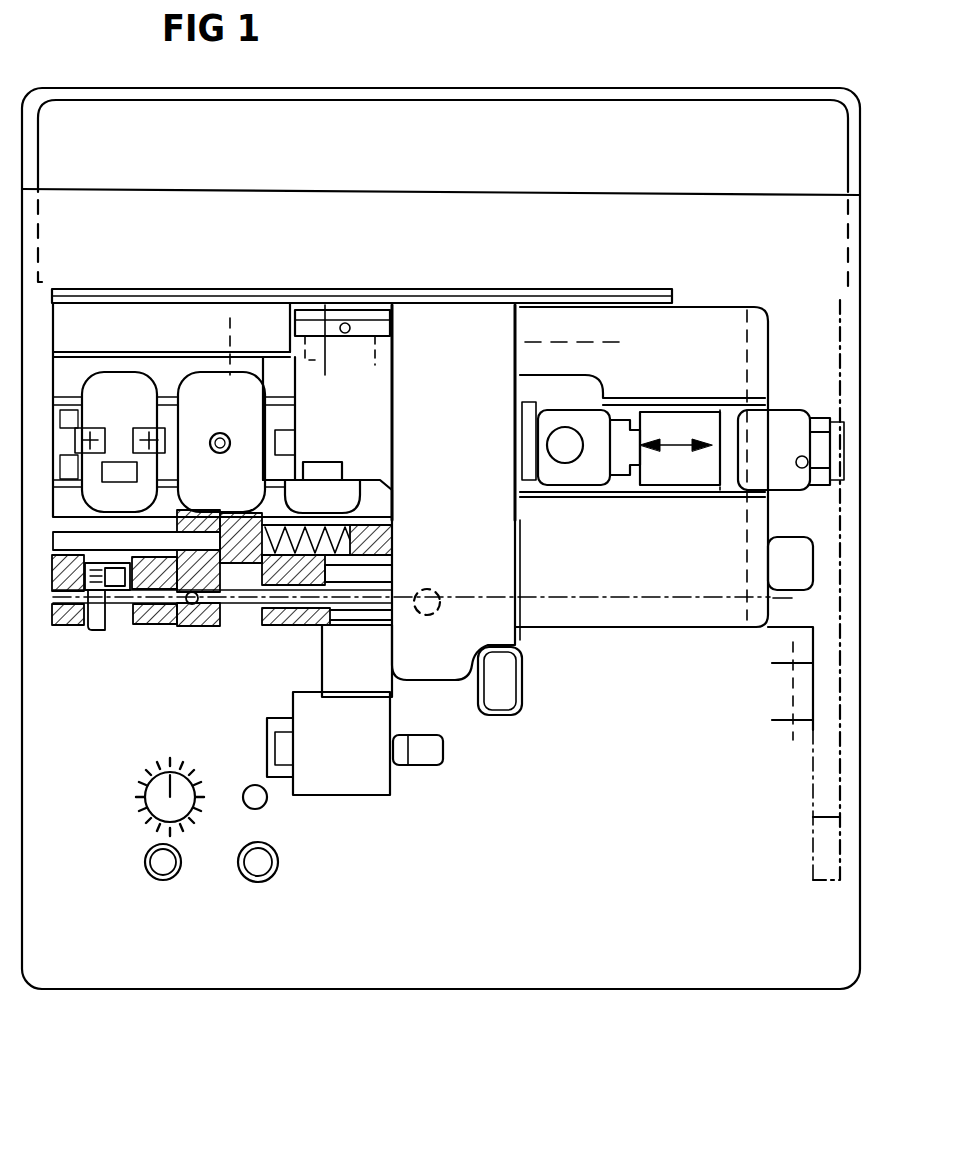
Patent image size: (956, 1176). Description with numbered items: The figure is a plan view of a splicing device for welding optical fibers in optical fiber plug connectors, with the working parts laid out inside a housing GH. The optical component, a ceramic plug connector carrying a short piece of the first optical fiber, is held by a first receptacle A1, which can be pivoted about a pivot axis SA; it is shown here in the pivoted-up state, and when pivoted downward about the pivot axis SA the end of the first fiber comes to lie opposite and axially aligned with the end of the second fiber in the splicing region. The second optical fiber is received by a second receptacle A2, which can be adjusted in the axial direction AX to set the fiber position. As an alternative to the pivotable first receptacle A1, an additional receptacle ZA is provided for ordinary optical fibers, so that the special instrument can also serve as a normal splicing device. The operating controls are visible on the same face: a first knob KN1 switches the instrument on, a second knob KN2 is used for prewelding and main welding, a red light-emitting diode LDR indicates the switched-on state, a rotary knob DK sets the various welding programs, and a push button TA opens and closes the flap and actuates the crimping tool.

The housing GH is at (690, 991).
The additional receptacle ZA is at (153, 274).
The axial direction AX is at (676, 443).
The second receptacle A2 is at (666, 636).
The pivot axis SA is at (357, 603).
The push button TA is at (497, 708).
The rotary knob DK is at (160, 780).
The red light-emitting diode LDR is at (250, 786).
The first receptacle A1 is at (344, 782).
The first knob KN1 is at (156, 862).
The second knob KN2 is at (262, 869).